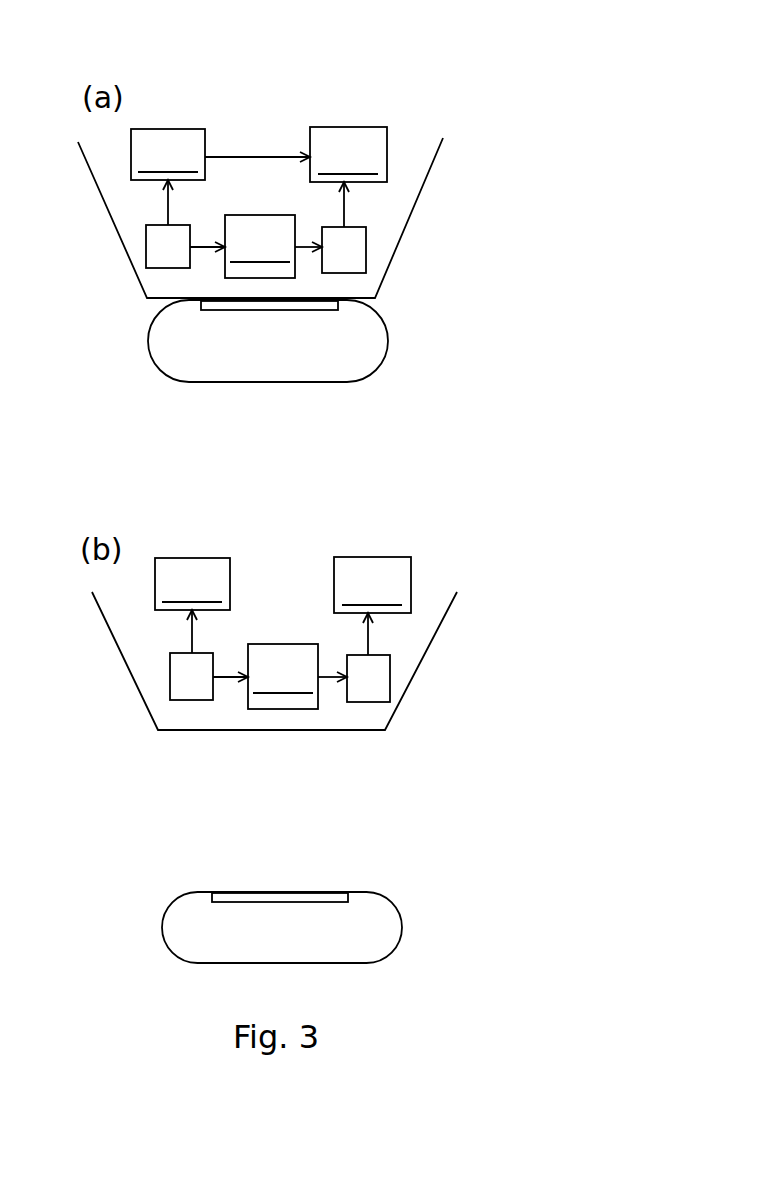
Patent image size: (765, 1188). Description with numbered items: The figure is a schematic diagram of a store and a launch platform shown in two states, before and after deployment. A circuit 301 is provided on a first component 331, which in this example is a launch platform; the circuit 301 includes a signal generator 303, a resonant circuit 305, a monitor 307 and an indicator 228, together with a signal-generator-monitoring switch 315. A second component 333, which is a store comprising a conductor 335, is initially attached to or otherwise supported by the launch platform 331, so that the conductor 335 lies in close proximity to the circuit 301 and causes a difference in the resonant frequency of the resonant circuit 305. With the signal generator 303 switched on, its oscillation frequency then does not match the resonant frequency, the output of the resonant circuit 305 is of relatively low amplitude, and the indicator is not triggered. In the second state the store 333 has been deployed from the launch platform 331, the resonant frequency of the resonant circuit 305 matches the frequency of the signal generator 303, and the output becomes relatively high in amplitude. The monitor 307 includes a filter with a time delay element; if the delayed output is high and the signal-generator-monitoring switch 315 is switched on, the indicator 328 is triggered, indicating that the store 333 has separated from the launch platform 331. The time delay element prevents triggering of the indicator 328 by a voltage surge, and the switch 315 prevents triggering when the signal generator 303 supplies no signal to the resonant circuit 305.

The circuit 301 is at (278, 107).
The signal generator 303 is at (146, 248).
The resonant circuit 305 is at (271, 462).
The monitor 307 is at (366, 253).
The signal-generator-monitoring switch 315 is at (180, 369).
The indicator 228 is at (348, 154).
The indicator 328 is at (372, 585).
The first component 331 is at (437, 160).
The second component 333 is at (388, 340).
The conductor 335 is at (290, 310).